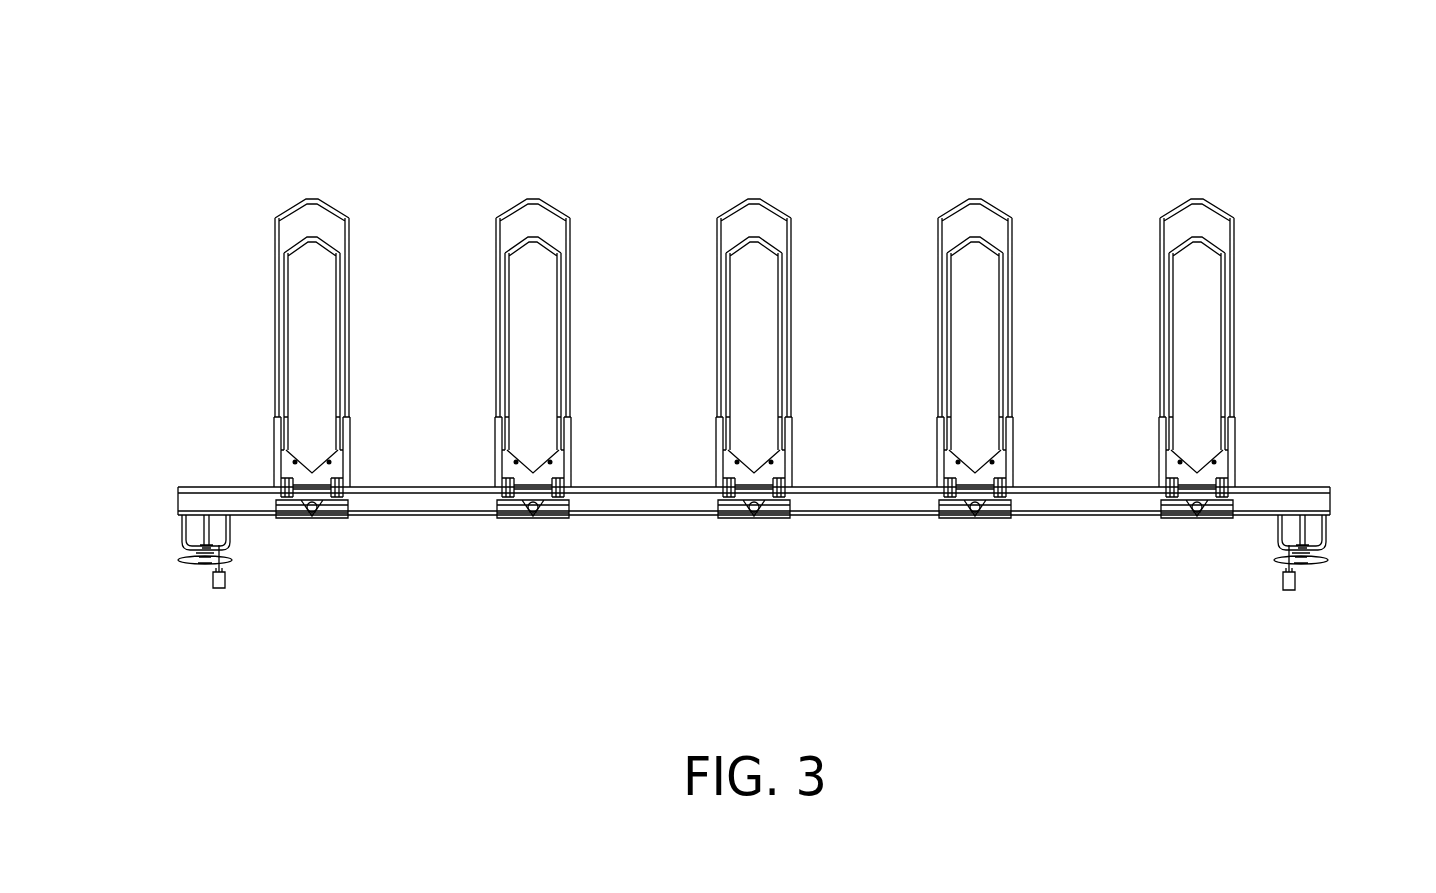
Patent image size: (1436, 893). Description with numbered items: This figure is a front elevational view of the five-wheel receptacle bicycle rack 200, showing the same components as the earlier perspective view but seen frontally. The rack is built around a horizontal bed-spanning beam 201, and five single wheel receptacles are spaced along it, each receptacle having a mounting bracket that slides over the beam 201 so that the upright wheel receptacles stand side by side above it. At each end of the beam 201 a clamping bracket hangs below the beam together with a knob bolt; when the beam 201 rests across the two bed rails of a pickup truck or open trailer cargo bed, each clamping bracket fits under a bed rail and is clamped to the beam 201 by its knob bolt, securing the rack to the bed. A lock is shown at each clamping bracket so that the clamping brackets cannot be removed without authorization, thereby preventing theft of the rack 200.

The five-wheel receptacle bicycle rack 200 is at (1180, 88).
The bed-spanning beam 201 is at (863, 503).